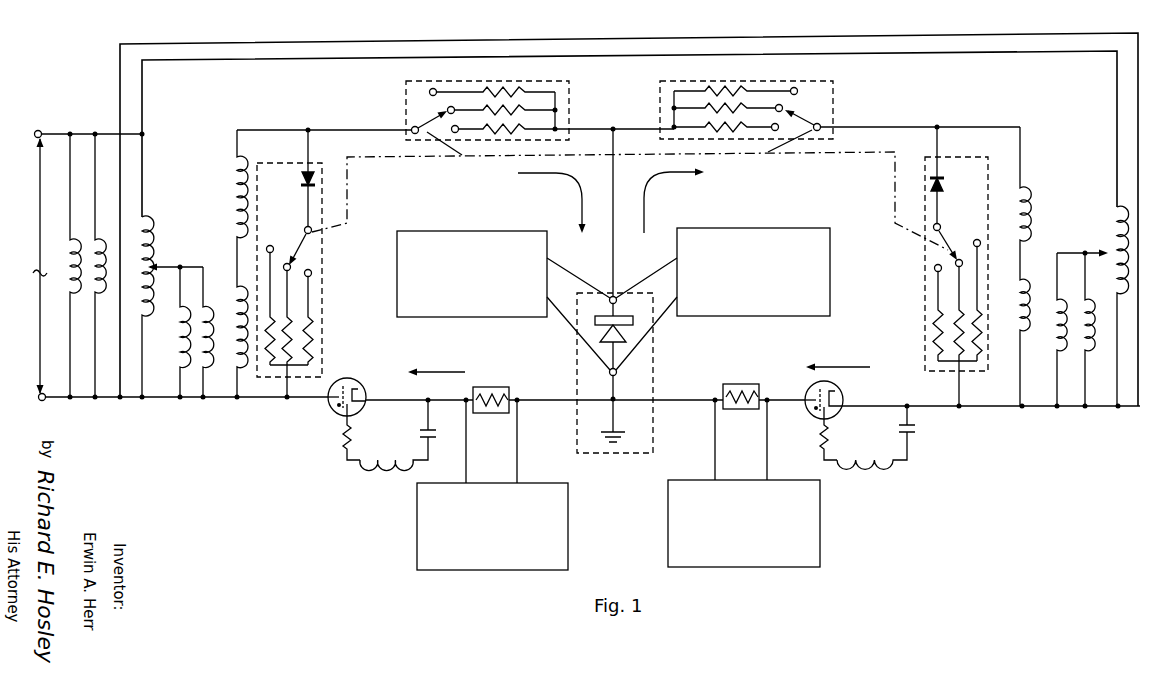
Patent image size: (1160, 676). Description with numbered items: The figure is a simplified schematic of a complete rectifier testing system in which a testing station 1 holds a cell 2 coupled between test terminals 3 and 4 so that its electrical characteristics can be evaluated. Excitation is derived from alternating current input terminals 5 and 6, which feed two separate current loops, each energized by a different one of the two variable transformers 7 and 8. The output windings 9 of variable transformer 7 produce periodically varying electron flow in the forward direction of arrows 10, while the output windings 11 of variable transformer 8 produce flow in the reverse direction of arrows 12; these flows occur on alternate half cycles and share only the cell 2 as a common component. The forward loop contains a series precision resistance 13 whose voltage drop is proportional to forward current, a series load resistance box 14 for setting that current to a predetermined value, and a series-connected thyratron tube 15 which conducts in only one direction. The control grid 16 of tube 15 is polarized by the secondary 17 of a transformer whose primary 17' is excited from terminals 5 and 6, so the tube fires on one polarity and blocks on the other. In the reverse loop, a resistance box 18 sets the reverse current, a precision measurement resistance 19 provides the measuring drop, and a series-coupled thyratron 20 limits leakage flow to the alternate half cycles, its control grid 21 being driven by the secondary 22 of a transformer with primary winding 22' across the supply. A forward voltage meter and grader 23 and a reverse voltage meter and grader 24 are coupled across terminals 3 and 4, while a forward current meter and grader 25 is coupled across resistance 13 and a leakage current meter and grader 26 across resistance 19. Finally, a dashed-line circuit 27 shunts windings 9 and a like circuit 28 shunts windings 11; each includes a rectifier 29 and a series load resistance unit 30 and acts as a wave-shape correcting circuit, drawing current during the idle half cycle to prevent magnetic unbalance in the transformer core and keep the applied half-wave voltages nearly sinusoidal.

The testing station 1 is at (612, 291).
The cell 2 is at (606, 328).
The test terminal 3 is at (617, 296).
The test terminal 4 is at (608, 374).
The alternating current input terminal 5 is at (44, 129).
The alternating current input terminal 6 is at (46, 401).
The variable transformer 7 is at (200, 245).
The variable transformer 8 is at (1069, 212).
The output windings 9 is at (233, 167).
The arrows 10 is at (558, 178).
The output windings 11 is at (1030, 197).
The arrows 12 is at (652, 180).
The series precision resistance 13 is at (491, 387).
The series load resistance box 14 is at (406, 100).
The thyratron tube 15 is at (352, 383).
The control grid 16 is at (341, 408).
The secondary 17 is at (398, 434).
The primary 17' is at (89, 267).
The resistance box 18 is at (834, 98).
The precision measurement resistance 19 is at (741, 384).
The thyratron 20 is at (844, 394).
The control grid 21 is at (822, 409).
The secondary 22 is at (876, 437).
The primary winding 22' is at (95, 267).
The forward voltage meter and grader 23 is at (438, 231).
The reverse voltage meter and grader 24 is at (771, 228).
The forward current meter and grader 25 is at (417, 535).
The leakage current meter and grader 26 is at (821, 522).
The circuit 27 is at (619, 263).
The circuit 28 is at (925, 291).
The rectifier 29 is at (303, 188).
The series load resistance unit 30 is at (283, 243).